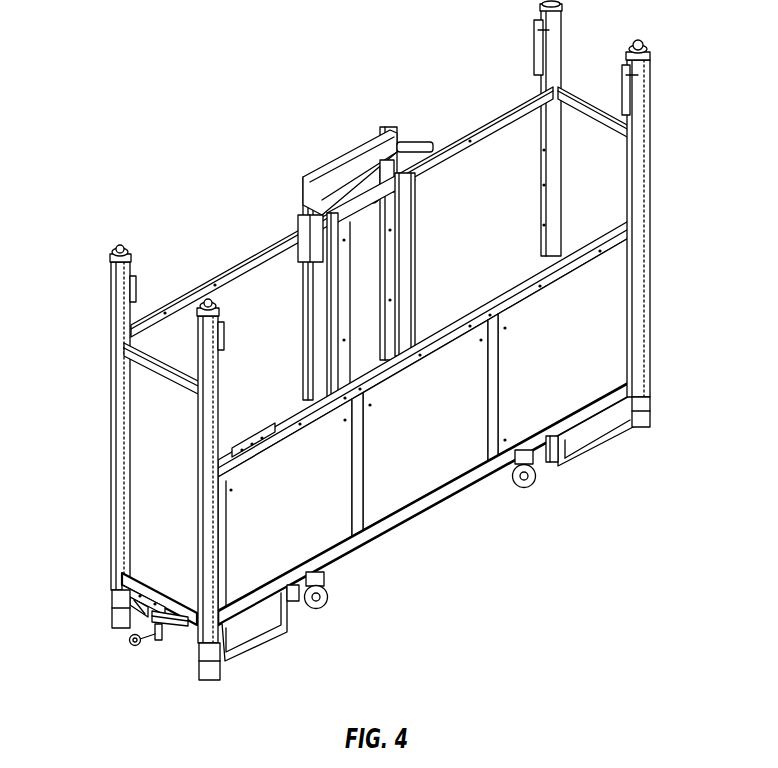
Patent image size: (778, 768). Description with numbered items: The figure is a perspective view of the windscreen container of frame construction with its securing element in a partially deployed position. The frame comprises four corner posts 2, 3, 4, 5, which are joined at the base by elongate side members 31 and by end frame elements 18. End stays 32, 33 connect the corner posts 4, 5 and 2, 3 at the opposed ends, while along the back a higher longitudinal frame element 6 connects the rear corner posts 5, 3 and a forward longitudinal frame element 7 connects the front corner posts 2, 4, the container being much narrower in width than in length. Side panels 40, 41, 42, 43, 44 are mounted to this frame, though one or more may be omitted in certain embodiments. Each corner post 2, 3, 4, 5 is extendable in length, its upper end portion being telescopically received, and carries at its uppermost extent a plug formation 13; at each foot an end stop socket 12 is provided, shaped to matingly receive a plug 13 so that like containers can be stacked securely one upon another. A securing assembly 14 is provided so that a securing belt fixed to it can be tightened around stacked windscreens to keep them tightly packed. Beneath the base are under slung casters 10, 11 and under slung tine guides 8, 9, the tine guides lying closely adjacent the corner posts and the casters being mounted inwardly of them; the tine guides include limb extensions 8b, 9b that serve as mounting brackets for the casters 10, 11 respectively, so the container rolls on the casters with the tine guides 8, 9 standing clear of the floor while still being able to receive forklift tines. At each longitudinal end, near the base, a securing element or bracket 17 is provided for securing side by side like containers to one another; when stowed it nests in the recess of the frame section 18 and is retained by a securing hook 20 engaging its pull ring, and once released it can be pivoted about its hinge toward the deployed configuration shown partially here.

The corner post 2 is at (648, 215).
The corner post 3 is at (543, 203).
The corner post 4 is at (222, 435).
The corner post 5 is at (112, 450).
The higher longitudinal frame element 6 is at (342, 206).
The forward longitudinal frame element 7 is at (487, 300).
The tine guide 8 is at (260, 648).
The limb extension 8b is at (296, 603).
The tine guide 9 is at (600, 447).
The limb extension 9b is at (550, 462).
The caster 10 is at (329, 603).
The caster 11 is at (515, 490).
The end stop socket 12 is at (108, 618).
The plug formation 13 is at (636, 50).
The securing assembly 14 is at (352, 180).
The securing element or bracket 17 is at (172, 635).
The end frame element 18 is at (158, 588).
The securing hook 20 is at (143, 575).
The elongate side member 31 is at (400, 527).
The end stay 32 is at (172, 400).
The end stay 33 is at (583, 100).
The side panel 40 is at (285, 505).
The side panel 41 is at (425, 425).
The side panel 42 is at (565, 345).
The side panel 43 is at (475, 135).
The side panel 44 is at (173, 316).